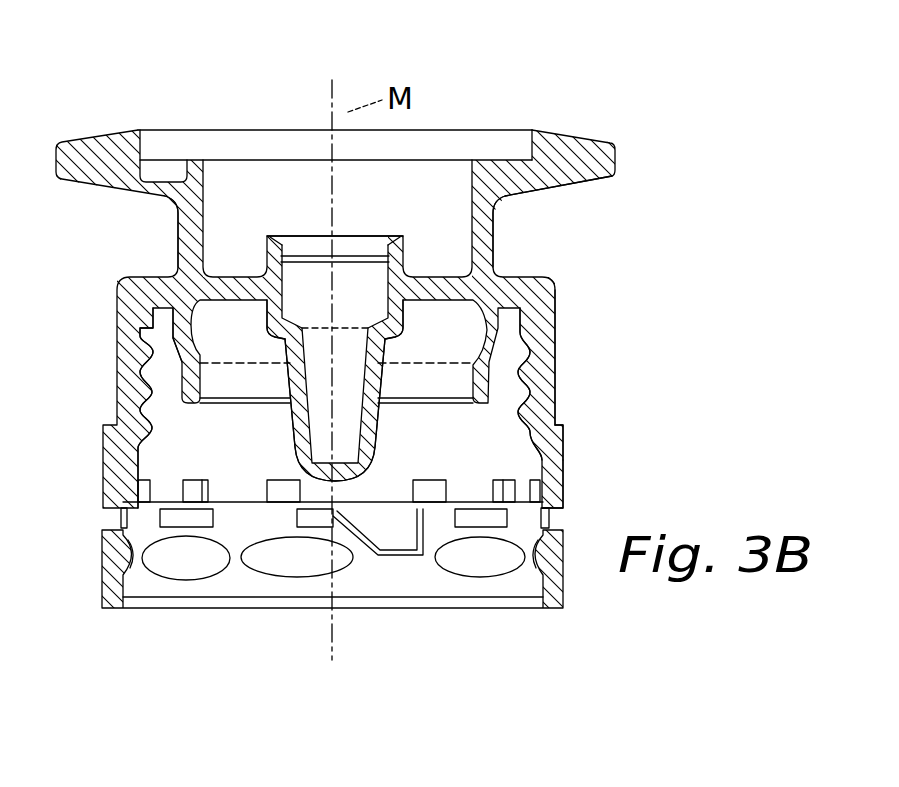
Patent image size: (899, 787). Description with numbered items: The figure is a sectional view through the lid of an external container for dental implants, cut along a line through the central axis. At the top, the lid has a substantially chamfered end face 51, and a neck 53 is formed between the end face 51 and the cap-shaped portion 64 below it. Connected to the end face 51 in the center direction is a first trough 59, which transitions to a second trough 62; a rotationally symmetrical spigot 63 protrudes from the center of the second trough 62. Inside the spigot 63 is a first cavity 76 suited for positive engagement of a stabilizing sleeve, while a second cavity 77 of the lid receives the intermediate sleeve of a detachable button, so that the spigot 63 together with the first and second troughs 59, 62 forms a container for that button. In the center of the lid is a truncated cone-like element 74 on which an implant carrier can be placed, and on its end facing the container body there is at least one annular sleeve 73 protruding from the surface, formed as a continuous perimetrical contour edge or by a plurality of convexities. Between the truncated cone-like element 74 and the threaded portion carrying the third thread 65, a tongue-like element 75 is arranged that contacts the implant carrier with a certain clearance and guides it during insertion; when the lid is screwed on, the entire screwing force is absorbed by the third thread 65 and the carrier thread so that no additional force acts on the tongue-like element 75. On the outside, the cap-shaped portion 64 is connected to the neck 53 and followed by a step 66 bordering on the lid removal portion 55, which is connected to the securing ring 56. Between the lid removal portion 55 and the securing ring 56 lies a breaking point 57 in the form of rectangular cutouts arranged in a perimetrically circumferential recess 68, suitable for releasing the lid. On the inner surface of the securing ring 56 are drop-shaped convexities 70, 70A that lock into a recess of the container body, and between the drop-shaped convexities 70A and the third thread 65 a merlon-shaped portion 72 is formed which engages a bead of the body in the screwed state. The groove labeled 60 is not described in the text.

The chamfered end face 51 is at (610, 142).
The neck 53 is at (493, 216).
The lid removal portion 55 is at (567, 465).
The securing ring 56 is at (565, 572).
The breaking point 57 is at (455, 520).
The first trough 59 is at (518, 133).
The groove 60 is at (160, 170).
The second trough 62 is at (438, 197).
The rotationally symmetrical spigot 63 is at (405, 256).
The cap-shaped portion 64 is at (557, 320).
The third thread 65 is at (522, 365).
The step 66 is at (561, 417).
The circumferential recess 68 is at (557, 517).
The drop-shaped convexities 70 is at (538, 556).
The drop-shaped convexities 70A is at (485, 578).
The merlon-shaped portion 72 is at (280, 498).
The annular sleeve 73 is at (292, 446).
The truncated cone-like element 74 is at (295, 415).
The tongue-like element 75 is at (174, 367).
The first cavity 76 is at (295, 303).
The second cavity 77 is at (215, 238).